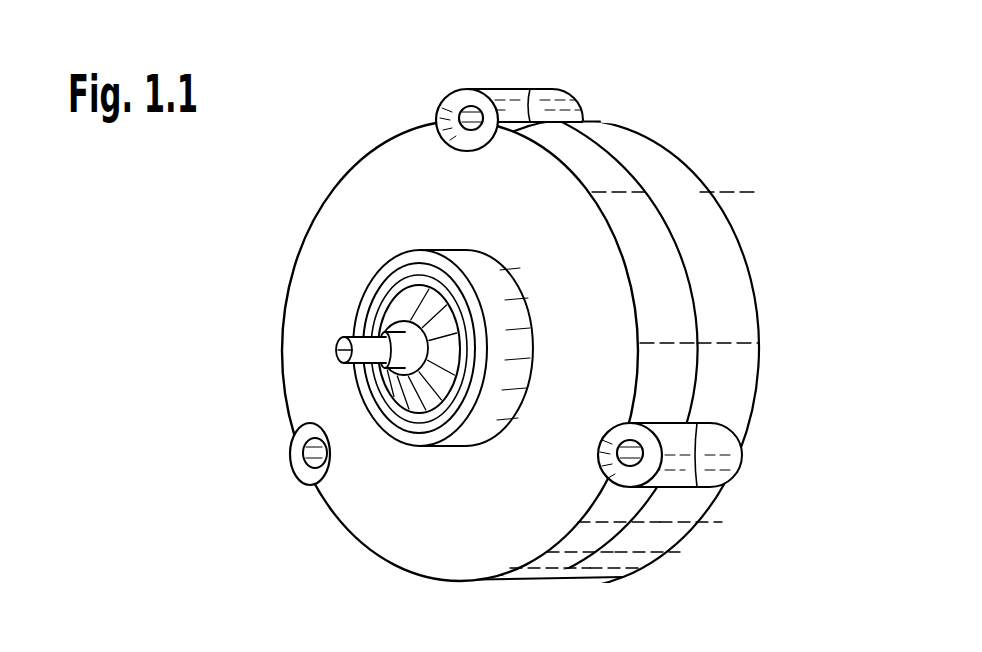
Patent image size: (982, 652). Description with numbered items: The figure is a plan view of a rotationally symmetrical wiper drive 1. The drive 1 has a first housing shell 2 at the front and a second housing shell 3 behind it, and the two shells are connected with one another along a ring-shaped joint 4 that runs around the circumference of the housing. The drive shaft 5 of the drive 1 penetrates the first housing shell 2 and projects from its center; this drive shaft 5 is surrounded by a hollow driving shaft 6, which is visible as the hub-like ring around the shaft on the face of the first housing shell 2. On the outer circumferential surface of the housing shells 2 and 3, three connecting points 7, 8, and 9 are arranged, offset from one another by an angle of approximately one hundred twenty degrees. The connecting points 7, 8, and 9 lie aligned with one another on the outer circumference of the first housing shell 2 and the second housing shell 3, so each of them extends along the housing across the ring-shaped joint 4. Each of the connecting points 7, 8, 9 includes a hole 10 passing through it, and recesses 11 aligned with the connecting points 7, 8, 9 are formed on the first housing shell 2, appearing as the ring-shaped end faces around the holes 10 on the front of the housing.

The rotationally symmetrical drive 1 is at (511, 311).
The first housing shell 2 is at (670, 313).
The second housing shell 3 is at (717, 236).
The ring-shaped joint 4 is at (690, 273).
The drive shaft 5 is at (383, 325).
The hollow driving shaft 6 is at (418, 298).
The connecting point 7 is at (483, 77).
The connecting point 8 is at (723, 442).
The connecting point 9 is at (297, 463).
The hole 10 is at (456, 112).
The recess 11 is at (447, 118).